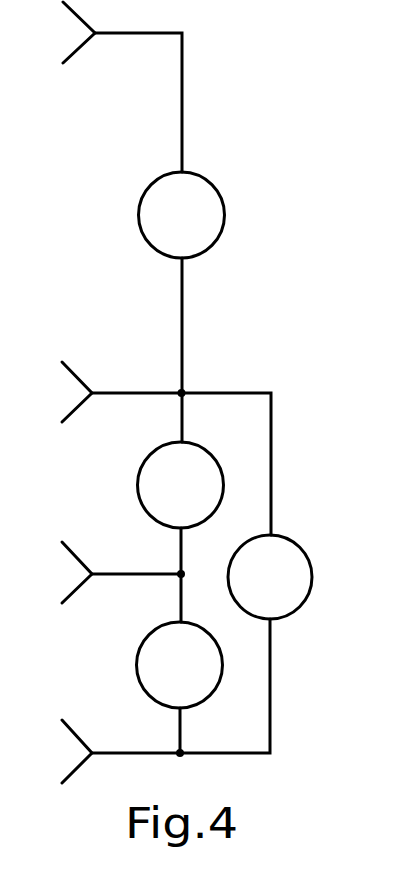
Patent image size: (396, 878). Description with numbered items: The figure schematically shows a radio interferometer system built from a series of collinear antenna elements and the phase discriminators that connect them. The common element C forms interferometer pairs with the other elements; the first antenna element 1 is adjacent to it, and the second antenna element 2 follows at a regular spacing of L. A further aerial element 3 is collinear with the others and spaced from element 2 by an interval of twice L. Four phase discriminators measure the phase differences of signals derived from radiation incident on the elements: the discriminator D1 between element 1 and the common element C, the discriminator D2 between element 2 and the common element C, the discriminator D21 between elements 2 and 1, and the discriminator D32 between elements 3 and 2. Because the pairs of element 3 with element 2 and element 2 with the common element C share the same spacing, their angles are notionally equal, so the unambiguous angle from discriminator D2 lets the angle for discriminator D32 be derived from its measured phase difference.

The aerial element 3 is at (70, 32).
The antenna element 2 is at (69, 392).
The antenna element 1 is at (70, 572).
The common element C is at (68, 751).
The phase discriminator D32 is at (182, 215).
The phase discriminator D21 is at (181, 485).
The phase discriminator D2 is at (270, 577).
The phase discriminator D1 is at (180, 665).